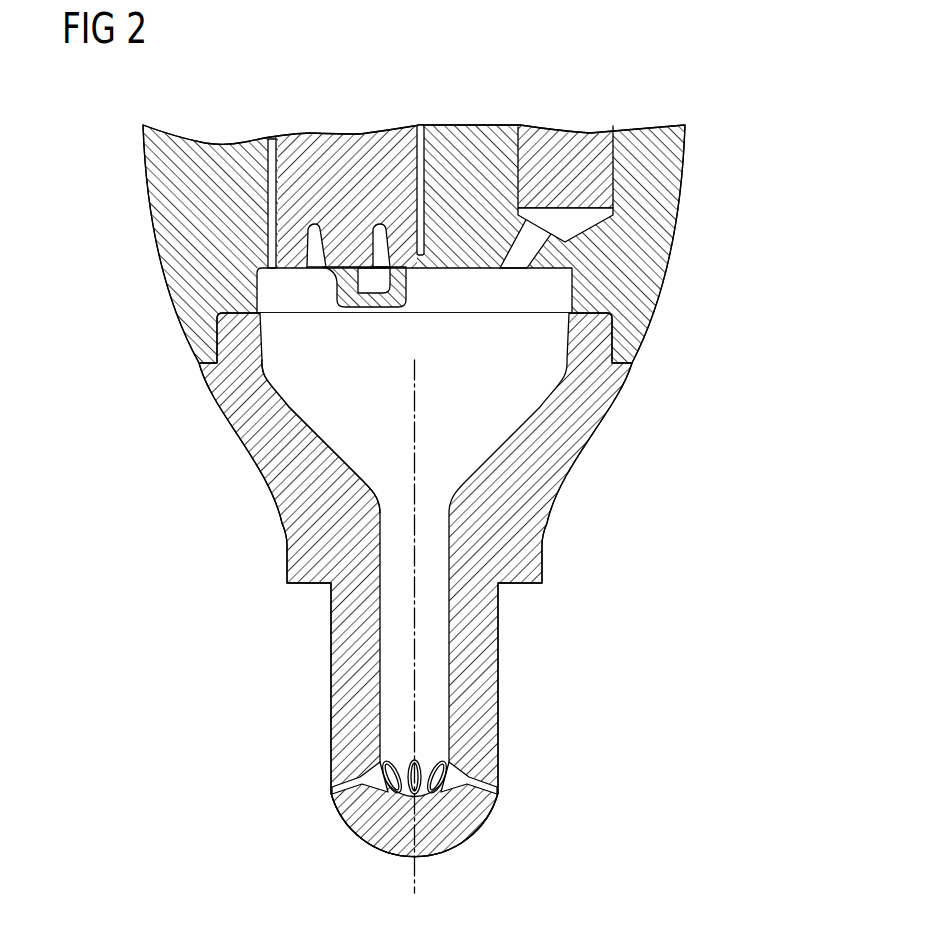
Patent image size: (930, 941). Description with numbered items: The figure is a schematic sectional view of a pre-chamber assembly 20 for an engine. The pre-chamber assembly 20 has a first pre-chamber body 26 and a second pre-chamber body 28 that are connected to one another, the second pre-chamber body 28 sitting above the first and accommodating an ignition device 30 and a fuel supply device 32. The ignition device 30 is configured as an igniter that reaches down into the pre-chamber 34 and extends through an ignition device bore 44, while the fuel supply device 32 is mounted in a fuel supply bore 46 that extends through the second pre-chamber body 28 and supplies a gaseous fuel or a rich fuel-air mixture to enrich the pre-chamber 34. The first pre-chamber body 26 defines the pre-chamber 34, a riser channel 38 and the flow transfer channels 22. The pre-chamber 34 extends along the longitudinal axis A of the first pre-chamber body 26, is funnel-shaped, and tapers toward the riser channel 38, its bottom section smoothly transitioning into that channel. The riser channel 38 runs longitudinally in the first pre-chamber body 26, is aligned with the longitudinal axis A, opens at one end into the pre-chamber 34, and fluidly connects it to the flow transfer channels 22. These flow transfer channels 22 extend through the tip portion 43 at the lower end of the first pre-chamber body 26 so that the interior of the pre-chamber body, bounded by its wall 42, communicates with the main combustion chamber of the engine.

The pre-chamber assembly 20 is at (452, 87).
The flow transfer channels 22 is at (333, 796).
The first pre-chamber body 26 is at (234, 514).
The second pre-chamber body 28 is at (124, 262).
The ignition device 30 is at (377, 182).
The fuel supply device 32 is at (587, 148).
The pre-chamber 34 is at (477, 366).
The riser channel 38 is at (433, 671).
The bore wall 42 is at (262, 347).
The tip portion 43 is at (363, 825).
The ignition device bore 44 is at (279, 160).
The fuel supply bore 46 is at (538, 144).
The longitudinal axis A is at (417, 872).